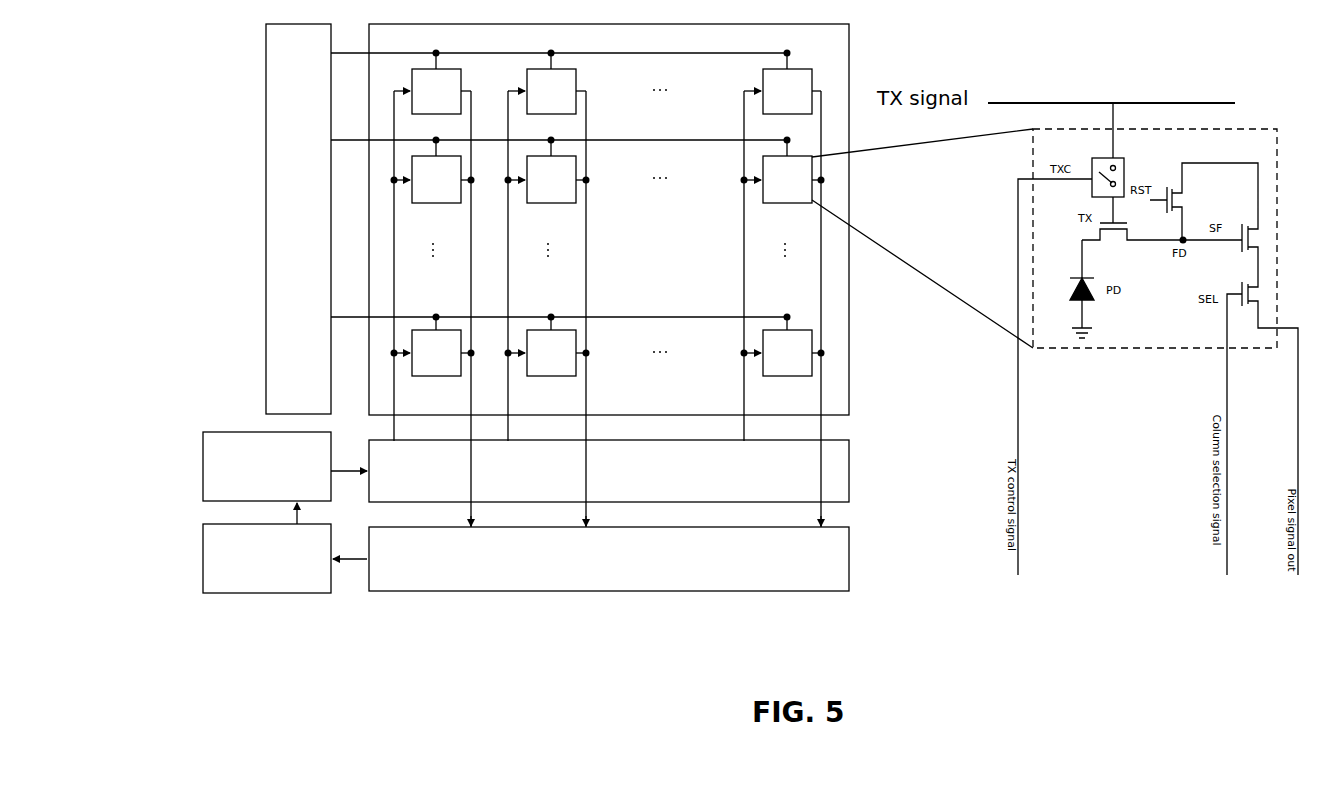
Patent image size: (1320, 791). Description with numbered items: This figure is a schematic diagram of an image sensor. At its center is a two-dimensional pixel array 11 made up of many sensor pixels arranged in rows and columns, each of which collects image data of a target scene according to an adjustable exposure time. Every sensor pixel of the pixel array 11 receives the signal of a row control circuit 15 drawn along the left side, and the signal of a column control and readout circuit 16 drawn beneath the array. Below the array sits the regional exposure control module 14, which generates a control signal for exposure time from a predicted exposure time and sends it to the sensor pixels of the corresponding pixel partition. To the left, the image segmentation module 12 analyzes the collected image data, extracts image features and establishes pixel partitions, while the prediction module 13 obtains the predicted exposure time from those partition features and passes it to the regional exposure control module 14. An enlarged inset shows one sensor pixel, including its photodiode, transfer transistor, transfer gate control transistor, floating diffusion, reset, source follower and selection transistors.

The two-dimensional pixel array 11 is at (832, 52).
The image segmentation module 12 is at (208, 551).
The prediction module 13 is at (216, 447).
The regional exposure control module 14 is at (838, 464).
The row control circuit 15 is at (272, 143).
The column control and readout circuit 16 is at (534, 578).